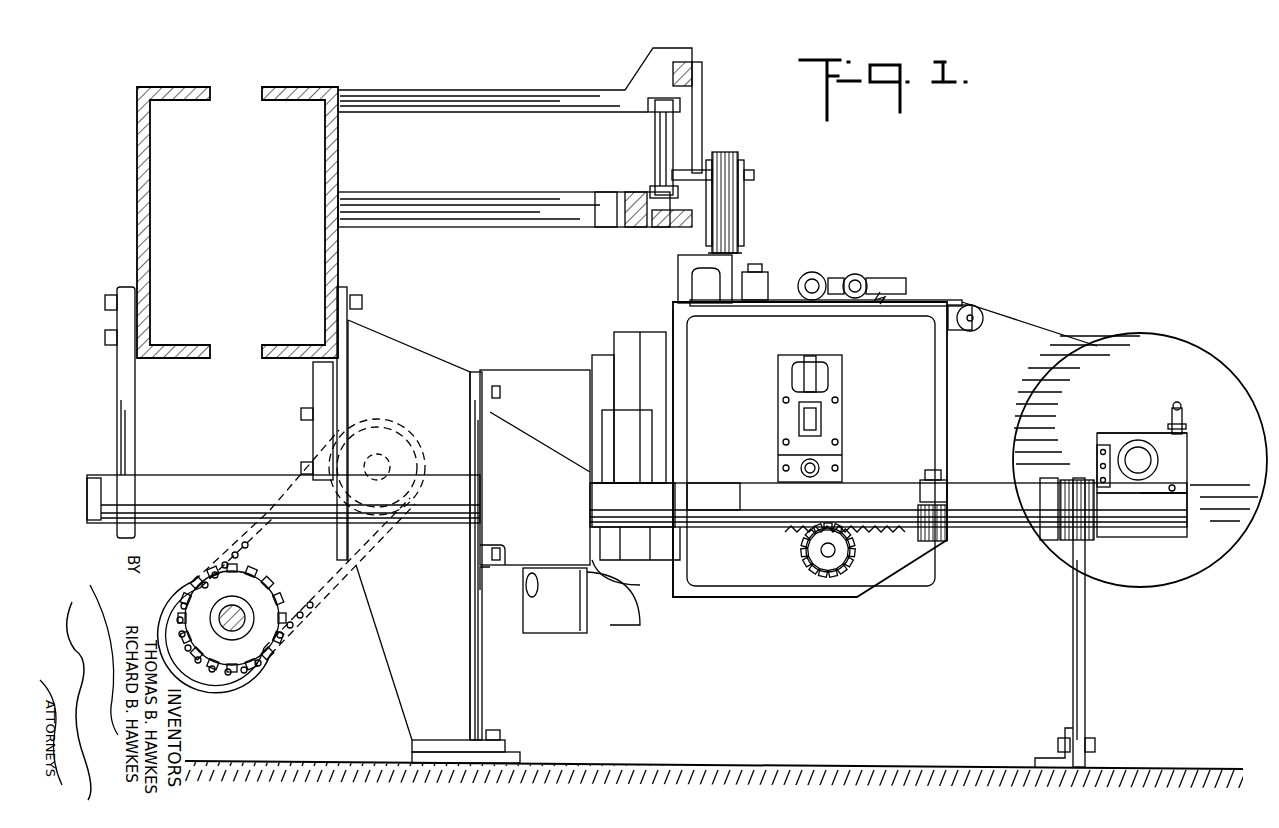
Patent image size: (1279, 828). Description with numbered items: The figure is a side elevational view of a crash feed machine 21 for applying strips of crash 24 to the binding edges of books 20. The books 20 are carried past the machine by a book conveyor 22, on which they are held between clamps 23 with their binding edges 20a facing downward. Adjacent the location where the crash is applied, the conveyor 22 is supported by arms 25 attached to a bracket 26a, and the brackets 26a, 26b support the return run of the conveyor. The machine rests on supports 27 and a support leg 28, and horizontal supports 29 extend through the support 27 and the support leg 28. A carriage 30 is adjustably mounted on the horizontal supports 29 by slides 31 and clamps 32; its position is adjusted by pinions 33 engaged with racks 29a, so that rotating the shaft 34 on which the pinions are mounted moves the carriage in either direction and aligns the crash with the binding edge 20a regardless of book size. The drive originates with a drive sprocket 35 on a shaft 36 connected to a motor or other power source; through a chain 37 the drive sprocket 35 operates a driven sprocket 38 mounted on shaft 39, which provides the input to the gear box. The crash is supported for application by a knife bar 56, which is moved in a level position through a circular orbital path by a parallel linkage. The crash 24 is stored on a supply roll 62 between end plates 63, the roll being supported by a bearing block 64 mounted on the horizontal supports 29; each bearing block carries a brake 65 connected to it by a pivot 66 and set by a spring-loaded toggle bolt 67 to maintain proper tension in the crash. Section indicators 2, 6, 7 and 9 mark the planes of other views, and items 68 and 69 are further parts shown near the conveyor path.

The section line 2- 2 is at (945, 233).
The section line 6- 6 is at (500, 500).
The section line 7- 7 is at (830, 311).
The section line 9- 9 is at (592, 303).
The book 20 is at (726, 196).
The binding edge 20a is at (738, 251).
The crash feed machine 21 is at (1030, 252).
The book conveyor 22 is at (724, 124).
The clamp 23 is at (742, 226).
The crash 24 is at (1060, 334).
The arm 25 is at (437, 112).
The bracket 26a is at (325, 221).
The bracket 26b is at (151, 221).
The support 27 is at (382, 664).
The support leg 28 is at (1086, 680).
The horizontal support 29 is at (197, 476).
The rack 29a is at (872, 530).
The carriage 30 is at (765, 606).
The slide 31 is at (735, 483).
The clamp 32 is at (940, 486).
The pinion 33 is at (808, 548).
The shaft 34 is at (822, 556).
The drive sprocket 35 is at (206, 590).
The shaft 36 is at (252, 605).
The chain 37 is at (314, 612).
The driven sprocket 38 is at (398, 520).
The shaft 39 is at (384, 448).
The knife bar 56 is at (680, 280).
The supply roll 62 is at (1140, 442).
The end plate 63 is at (1180, 576).
The bearing block 64 is at (1187, 477).
The brake 65 is at (1112, 436).
The pivot 66 is at (1098, 452).
The clamp screw 67 is at (1191, 420).
The idler roller 68 is at (978, 328).
The guide rollers 69 is at (925, 306).